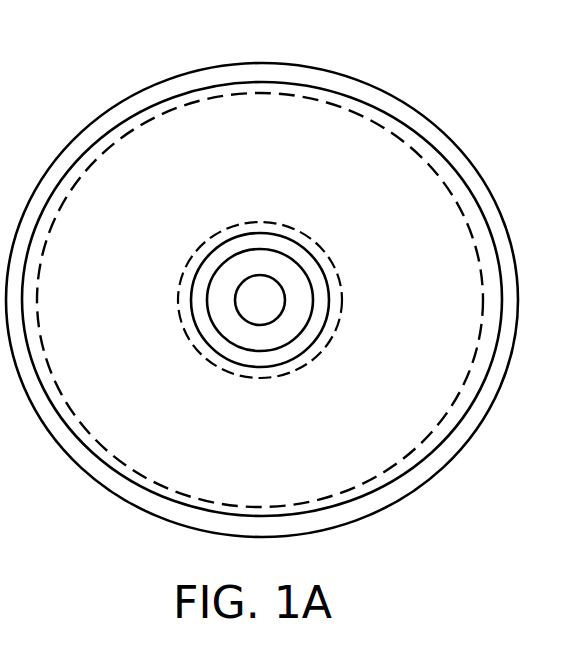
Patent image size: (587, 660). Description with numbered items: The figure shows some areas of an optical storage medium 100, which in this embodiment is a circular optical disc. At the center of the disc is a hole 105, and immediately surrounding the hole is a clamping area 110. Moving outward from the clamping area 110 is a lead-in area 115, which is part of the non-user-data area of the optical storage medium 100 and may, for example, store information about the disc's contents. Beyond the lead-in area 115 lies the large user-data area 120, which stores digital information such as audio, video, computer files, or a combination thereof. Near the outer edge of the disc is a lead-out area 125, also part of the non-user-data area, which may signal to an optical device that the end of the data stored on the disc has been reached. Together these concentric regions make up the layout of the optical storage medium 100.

The optical storage medium 100 is at (342, 75).
The hole 105 is at (272, 301).
The clamping area 110 is at (270, 263).
The lead-in area 115 is at (186, 287).
The user-data area 120 is at (180, 140).
The lead-out area 125 is at (408, 138).